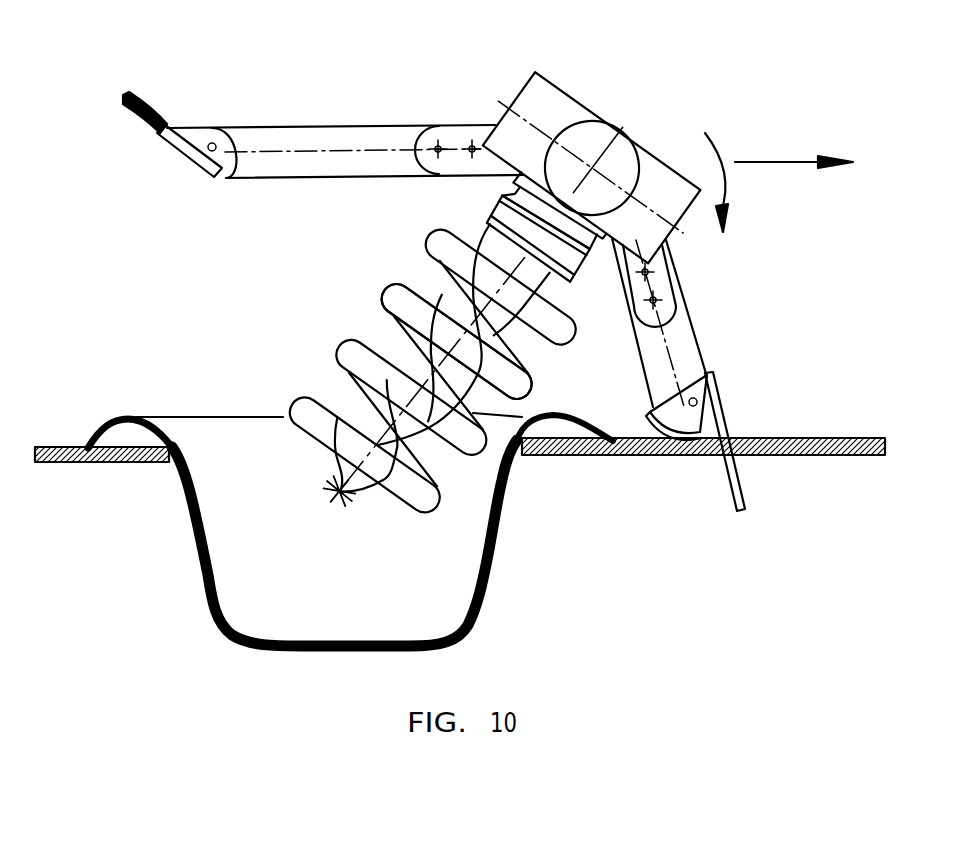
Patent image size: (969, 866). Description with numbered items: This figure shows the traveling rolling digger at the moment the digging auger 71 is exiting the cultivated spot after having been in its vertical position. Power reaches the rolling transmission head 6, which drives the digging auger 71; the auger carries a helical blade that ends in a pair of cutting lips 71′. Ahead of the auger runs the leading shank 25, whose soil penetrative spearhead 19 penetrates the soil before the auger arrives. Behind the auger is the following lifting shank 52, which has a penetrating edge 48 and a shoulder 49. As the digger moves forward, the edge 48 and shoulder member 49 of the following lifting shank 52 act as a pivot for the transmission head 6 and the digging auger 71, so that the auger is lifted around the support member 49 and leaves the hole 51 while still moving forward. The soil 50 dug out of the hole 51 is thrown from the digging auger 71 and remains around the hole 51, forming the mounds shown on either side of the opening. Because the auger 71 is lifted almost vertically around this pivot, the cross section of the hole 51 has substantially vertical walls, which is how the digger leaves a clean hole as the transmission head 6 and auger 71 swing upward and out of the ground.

The rolling transmission head 6 is at (527, 102).
The soil penetrative spearhead 19 is at (145, 107).
The leading shank 25 is at (259, 140).
The penetrating edge 48 is at (728, 470).
The shoulder 49 is at (670, 452).
The soil 50 is at (127, 415).
The hole 51 is at (462, 522).
The following lifting shank 52 is at (683, 331).
The digging auger 71 is at (457, 303).
The cutting lips 71′ is at (390, 293).